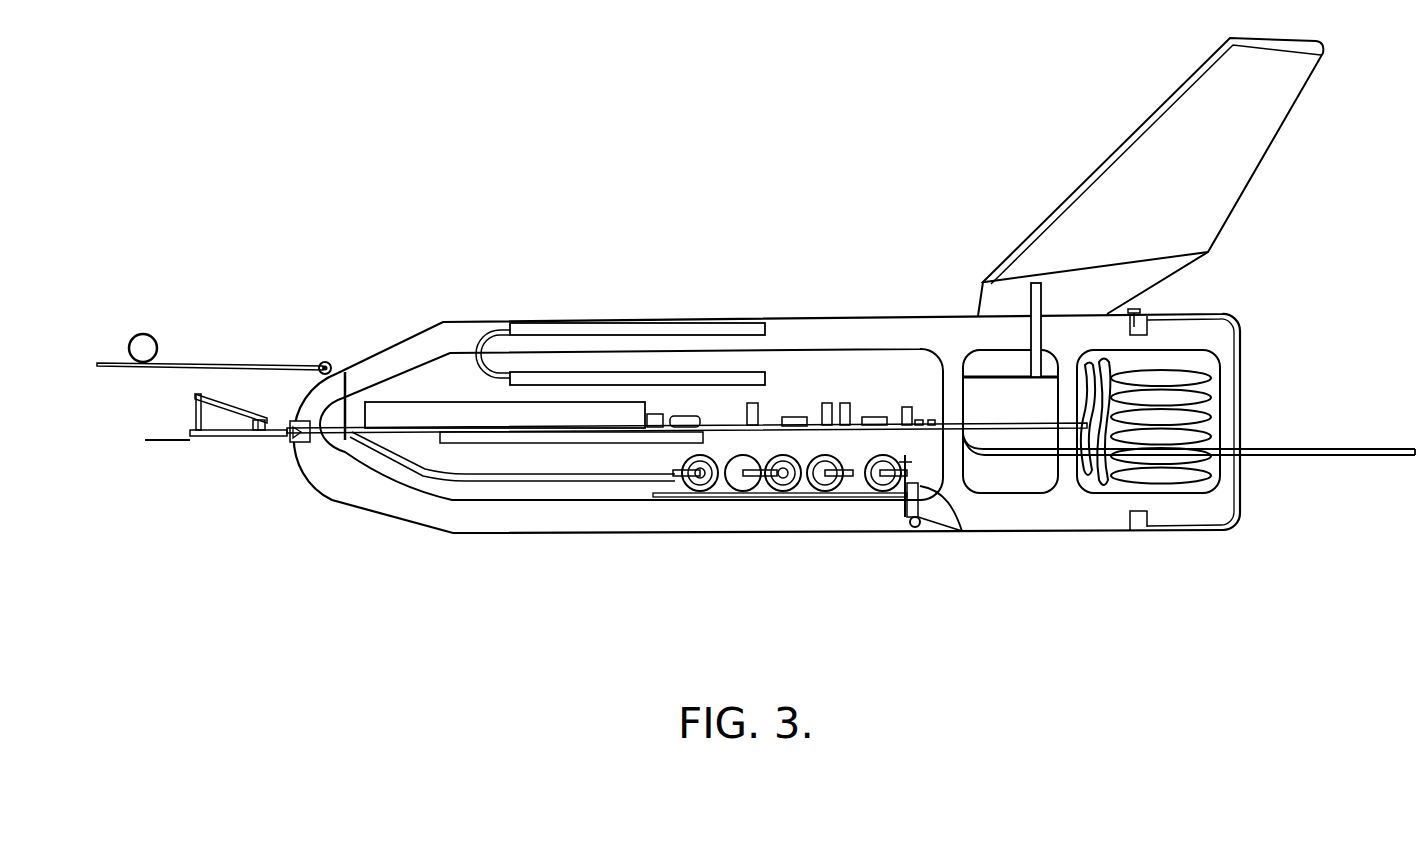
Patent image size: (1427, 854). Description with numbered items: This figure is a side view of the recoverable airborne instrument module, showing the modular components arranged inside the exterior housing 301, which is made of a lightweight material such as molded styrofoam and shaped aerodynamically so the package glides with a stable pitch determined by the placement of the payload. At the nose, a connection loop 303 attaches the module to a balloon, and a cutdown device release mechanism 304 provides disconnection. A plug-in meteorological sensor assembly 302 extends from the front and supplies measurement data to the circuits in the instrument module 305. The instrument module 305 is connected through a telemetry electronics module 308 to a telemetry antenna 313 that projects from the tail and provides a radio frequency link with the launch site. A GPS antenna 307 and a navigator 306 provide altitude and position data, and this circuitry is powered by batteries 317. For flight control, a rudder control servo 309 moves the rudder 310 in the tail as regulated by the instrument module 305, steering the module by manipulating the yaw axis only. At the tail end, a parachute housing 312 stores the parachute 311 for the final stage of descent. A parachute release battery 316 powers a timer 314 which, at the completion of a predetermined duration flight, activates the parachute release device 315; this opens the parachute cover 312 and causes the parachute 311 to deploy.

The exterior housing 301 is at (415, 530).
The plug-in meteorological sensor assembly 302 is at (238, 436).
The connection loop 303 is at (140, 333).
The cutdown device release mechanism 304 is at (322, 362).
The instrument module 305 is at (453, 400).
The navigator 306 is at (558, 371).
The GPS antenna 307 is at (635, 322).
The telemetry electronics module 308 is at (863, 415).
The rudder control servo 309 is at (990, 376).
The rudder 310 is at (1040, 224).
The parachute 311 is at (1178, 370).
The parachute housing 312 is at (1240, 392).
The telemetry antenna 313 is at (1290, 457).
The timer 314 is at (930, 487).
The parachute release device 315 is at (917, 530).
The parachute release battery 316 is at (878, 490).
The batteries 317 is at (740, 490).